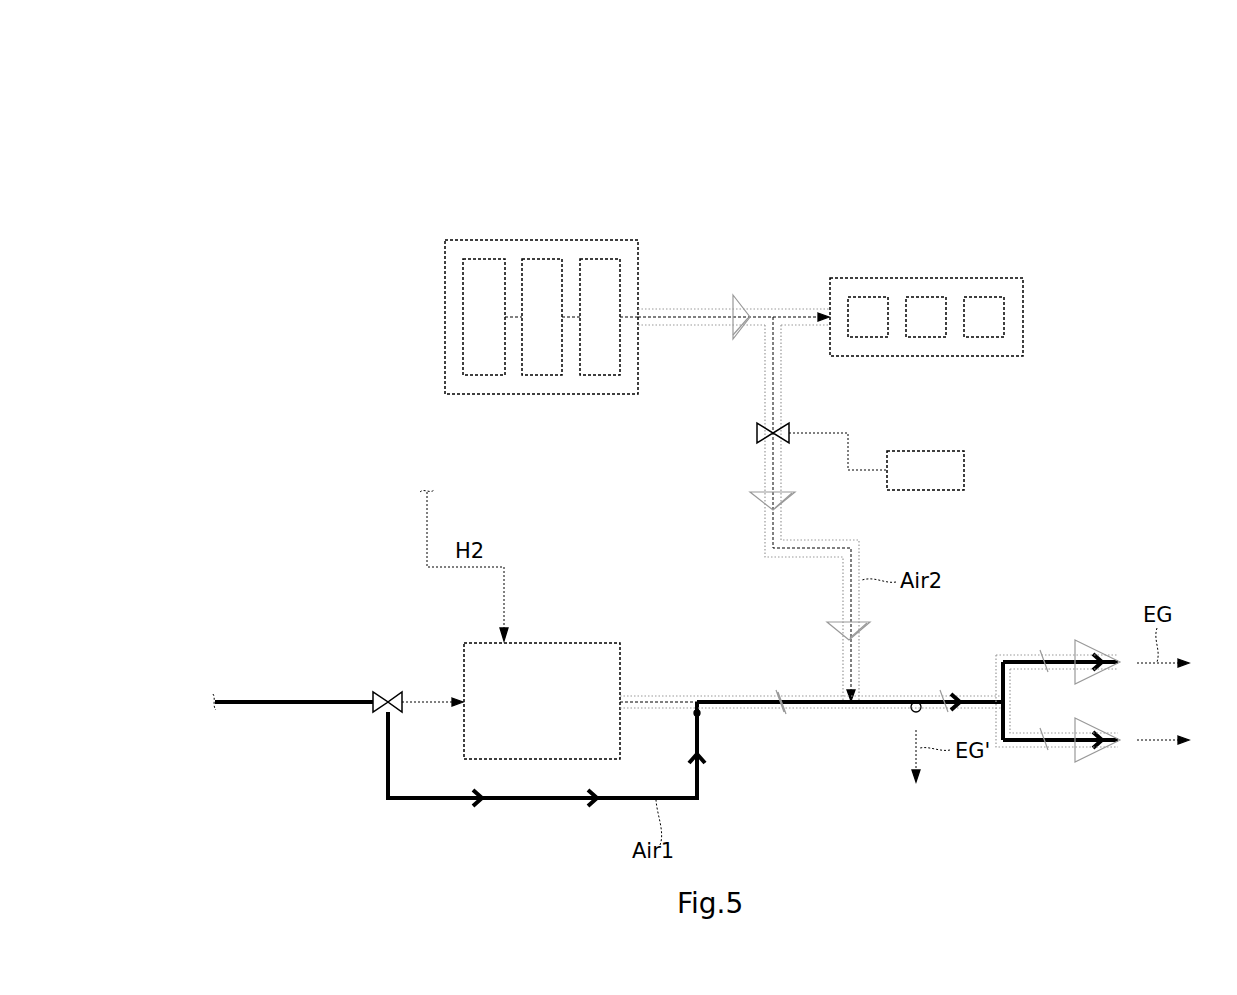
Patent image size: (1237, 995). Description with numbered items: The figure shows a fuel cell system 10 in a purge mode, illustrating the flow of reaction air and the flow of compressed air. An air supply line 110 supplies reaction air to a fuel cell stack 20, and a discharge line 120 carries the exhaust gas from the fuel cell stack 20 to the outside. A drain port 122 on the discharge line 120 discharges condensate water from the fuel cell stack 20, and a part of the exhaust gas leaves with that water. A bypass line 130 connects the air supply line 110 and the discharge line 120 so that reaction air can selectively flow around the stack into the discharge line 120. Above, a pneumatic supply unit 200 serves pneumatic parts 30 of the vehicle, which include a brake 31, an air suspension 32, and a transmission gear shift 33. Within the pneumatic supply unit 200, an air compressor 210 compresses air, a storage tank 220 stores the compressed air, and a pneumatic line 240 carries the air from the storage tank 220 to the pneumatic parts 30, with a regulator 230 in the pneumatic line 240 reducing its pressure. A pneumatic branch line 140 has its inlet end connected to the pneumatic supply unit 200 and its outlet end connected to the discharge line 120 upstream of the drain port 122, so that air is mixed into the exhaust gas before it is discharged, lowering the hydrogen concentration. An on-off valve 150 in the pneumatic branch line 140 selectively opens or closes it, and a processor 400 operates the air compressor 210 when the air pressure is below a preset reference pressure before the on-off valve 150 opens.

The fuel cell system 10 is at (438, 104).
The fuel cell stack 20 is at (541, 643).
The pneumatic parts 30 is at (1030, 317).
The brake 31 is at (866, 297).
The air suspension 32 is at (924, 297).
The transmission gear shift 33 is at (982, 297).
The air supply line 110 is at (256, 704).
The discharge line 120 is at (752, 708).
The drain port 122 is at (912, 712).
The bypass line 130 is at (543, 800).
The pneumatic branch line 140 is at (809, 552).
The on-off valve 150 is at (757, 433).
The pneumatic supply unit 200 is at (440, 317).
The air compressor 210 is at (481, 259).
The storage tank 220 is at (540, 259).
The regulator 230 is at (598, 259).
The pneumatic line 240 is at (673, 311).
The processor 400 is at (964, 470).